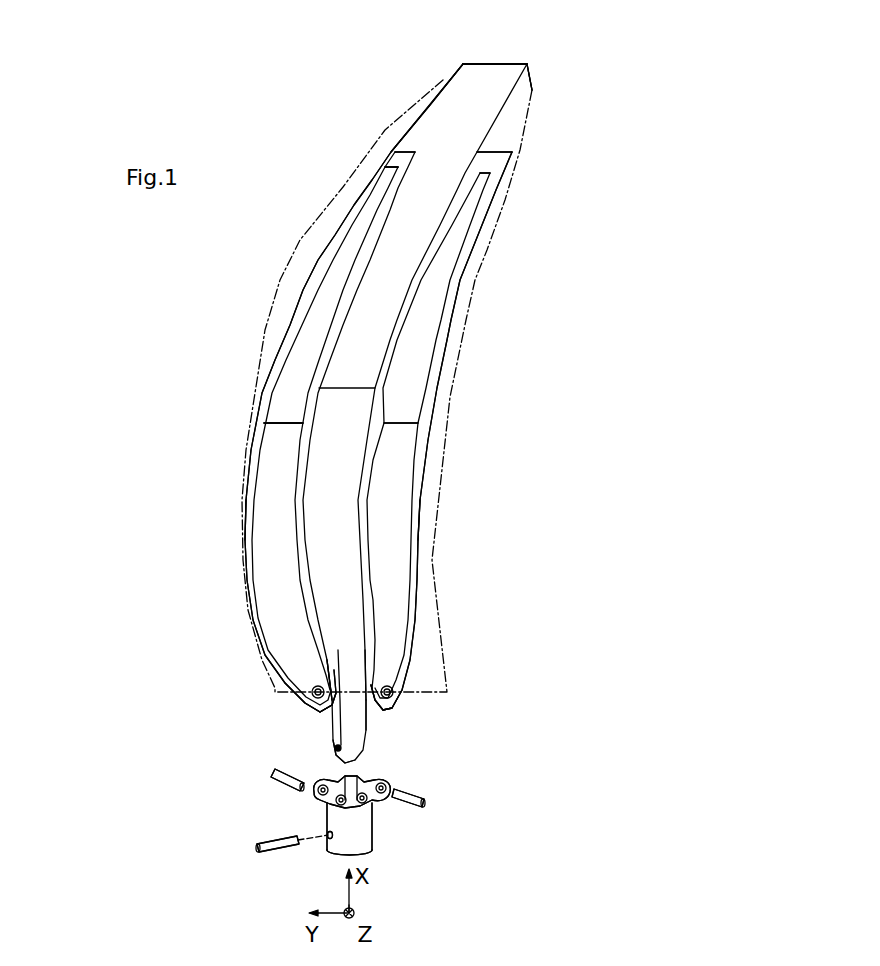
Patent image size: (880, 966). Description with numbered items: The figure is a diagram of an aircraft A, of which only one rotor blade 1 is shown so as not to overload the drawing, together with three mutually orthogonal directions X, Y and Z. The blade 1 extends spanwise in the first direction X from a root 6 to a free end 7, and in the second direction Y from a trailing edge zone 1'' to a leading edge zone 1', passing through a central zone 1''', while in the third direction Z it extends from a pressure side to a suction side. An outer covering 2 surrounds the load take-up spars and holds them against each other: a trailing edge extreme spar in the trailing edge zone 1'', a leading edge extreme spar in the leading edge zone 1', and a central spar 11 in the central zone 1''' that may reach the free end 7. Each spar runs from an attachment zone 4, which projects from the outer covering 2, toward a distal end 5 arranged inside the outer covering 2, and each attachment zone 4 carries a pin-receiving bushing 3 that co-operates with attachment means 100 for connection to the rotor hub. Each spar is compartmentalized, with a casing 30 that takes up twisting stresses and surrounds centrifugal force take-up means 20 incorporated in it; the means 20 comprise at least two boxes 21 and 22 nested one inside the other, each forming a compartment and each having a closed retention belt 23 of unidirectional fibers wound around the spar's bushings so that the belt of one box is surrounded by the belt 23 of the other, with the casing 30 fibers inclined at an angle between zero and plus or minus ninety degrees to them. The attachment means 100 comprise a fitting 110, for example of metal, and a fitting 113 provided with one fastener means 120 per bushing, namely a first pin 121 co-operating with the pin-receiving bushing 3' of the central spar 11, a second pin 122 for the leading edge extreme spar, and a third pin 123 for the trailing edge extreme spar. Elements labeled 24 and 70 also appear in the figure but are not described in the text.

The blade 1 is at (183, 743).
The leading edge zone 1' is at (194, 582).
The trailing edge zone 1'' is at (488, 560).
The central zone 1''' is at (536, 47).
The outer covering 2 is at (407, 117).
The pin-receiving bushing 3 is at (389, 752).
The pin-receiving bushing of the central spar 3' is at (286, 755).
The attachment zone 4 is at (466, 716).
The distal end 5 is at (541, 92).
The root 6 is at (484, 740).
The free end 7 is at (540, 58).
The central spar 11 is at (520, 965).
The centrifugal force take-up means 20 is at (401, 357).
The box 21 is at (393, 553).
The box 22 is at (350, 238).
The retention belt 23 is at (468, 82).
The lower element 24 is at (286, 939).
The casing 30 is at (455, 120).
The lower element 70 is at (364, 935).
The attachment means 100 is at (411, 857).
The fitting 110 is at (261, 822).
The fitting 113 is at (401, 813).
The fastener means 120 is at (158, 877).
The first pin 121 is at (258, 848).
The second pin 122 is at (272, 780).
The third pin 123 is at (427, 793).
The aircraft A is at (650, 78).